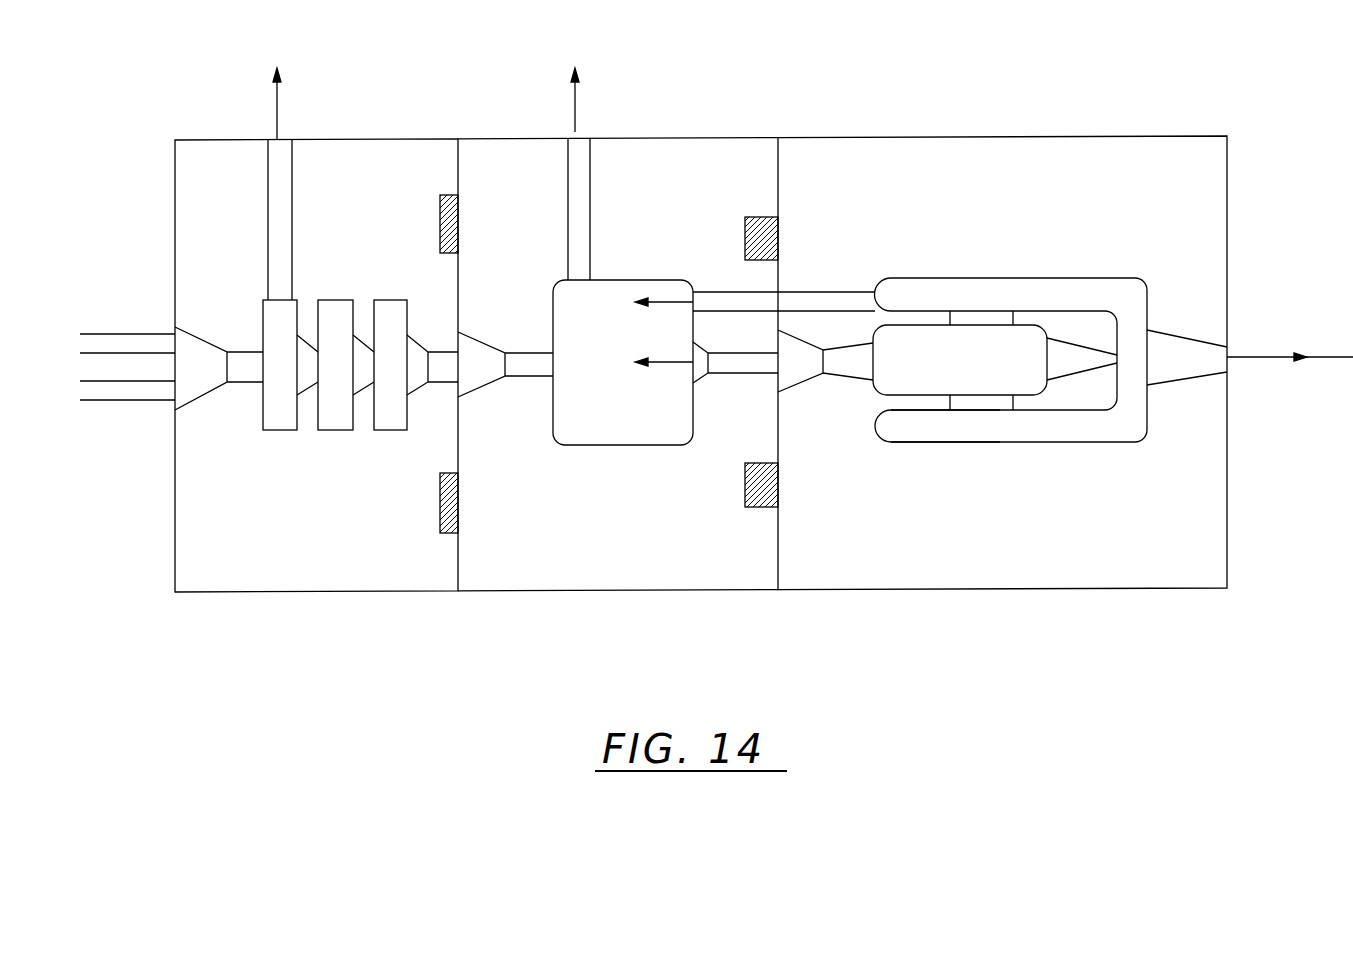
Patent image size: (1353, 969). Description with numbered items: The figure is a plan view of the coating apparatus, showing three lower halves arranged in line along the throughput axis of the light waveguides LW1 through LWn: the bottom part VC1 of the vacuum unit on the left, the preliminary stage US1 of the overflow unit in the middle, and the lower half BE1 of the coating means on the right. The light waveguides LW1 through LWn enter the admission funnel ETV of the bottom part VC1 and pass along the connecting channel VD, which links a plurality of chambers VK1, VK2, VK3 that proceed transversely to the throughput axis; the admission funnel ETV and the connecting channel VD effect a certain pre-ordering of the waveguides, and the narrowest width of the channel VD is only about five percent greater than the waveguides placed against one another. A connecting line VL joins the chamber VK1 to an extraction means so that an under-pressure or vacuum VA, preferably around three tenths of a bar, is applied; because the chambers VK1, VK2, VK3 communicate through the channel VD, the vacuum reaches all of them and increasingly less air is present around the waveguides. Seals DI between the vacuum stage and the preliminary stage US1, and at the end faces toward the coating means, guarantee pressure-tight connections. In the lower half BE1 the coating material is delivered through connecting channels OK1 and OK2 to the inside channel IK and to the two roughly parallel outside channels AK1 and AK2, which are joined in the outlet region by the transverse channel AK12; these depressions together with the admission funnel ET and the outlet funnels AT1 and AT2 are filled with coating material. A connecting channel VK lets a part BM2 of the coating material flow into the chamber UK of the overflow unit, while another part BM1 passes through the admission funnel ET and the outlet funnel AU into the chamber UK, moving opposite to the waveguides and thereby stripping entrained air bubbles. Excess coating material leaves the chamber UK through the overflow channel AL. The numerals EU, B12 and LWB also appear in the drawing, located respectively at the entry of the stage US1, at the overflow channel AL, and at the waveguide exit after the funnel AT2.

The bottom part of vacuum unit VC1 is at (217, 592).
The preliminary stage US1 is at (538, 128).
The lower half of coating means BE1 is at (1093, 128).
The light waveguide LW1 is at (128, 334).
The light waveguide LWn is at (118, 400).
The admission funnel ETV is at (188, 353).
The connecting channel VD is at (337, 453).
The chamber VK1 is at (277, 415).
The chamber VK2 is at (337, 418).
The chamber VK3 is at (385, 415).
The connecting line VL is at (282, 200).
The under-pressure or vacuum VA is at (277, 115).
The seal DI is at (452, 533).
The inlet transition of intermediate section EU is at (473, 360).
The chamber UK is at (578, 423).
The overflow channel AL is at (575, 223).
The bypass outlet B12 is at (577, 118).
The part of the coating material BM1 is at (672, 363).
The part of the coating material BM2 is at (668, 302).
The connecting channel VK is at (728, 305).
The outlet funnel AU is at (758, 365).
The admission funnel ET is at (792, 370).
The inside channel IK is at (1005, 370).
The outside channel AK1 is at (905, 298).
The outside channel AK2 is at (932, 428).
The transverse channel AK12 is at (1098, 382).
The connecting channel OK1 is at (975, 322).
The connecting channel OK2 is at (987, 405).
The outlet funnel AT1 is at (1073, 363).
The outlet funnel AT2 is at (1185, 363).
The air outlet to consumer LWB is at (1275, 357).